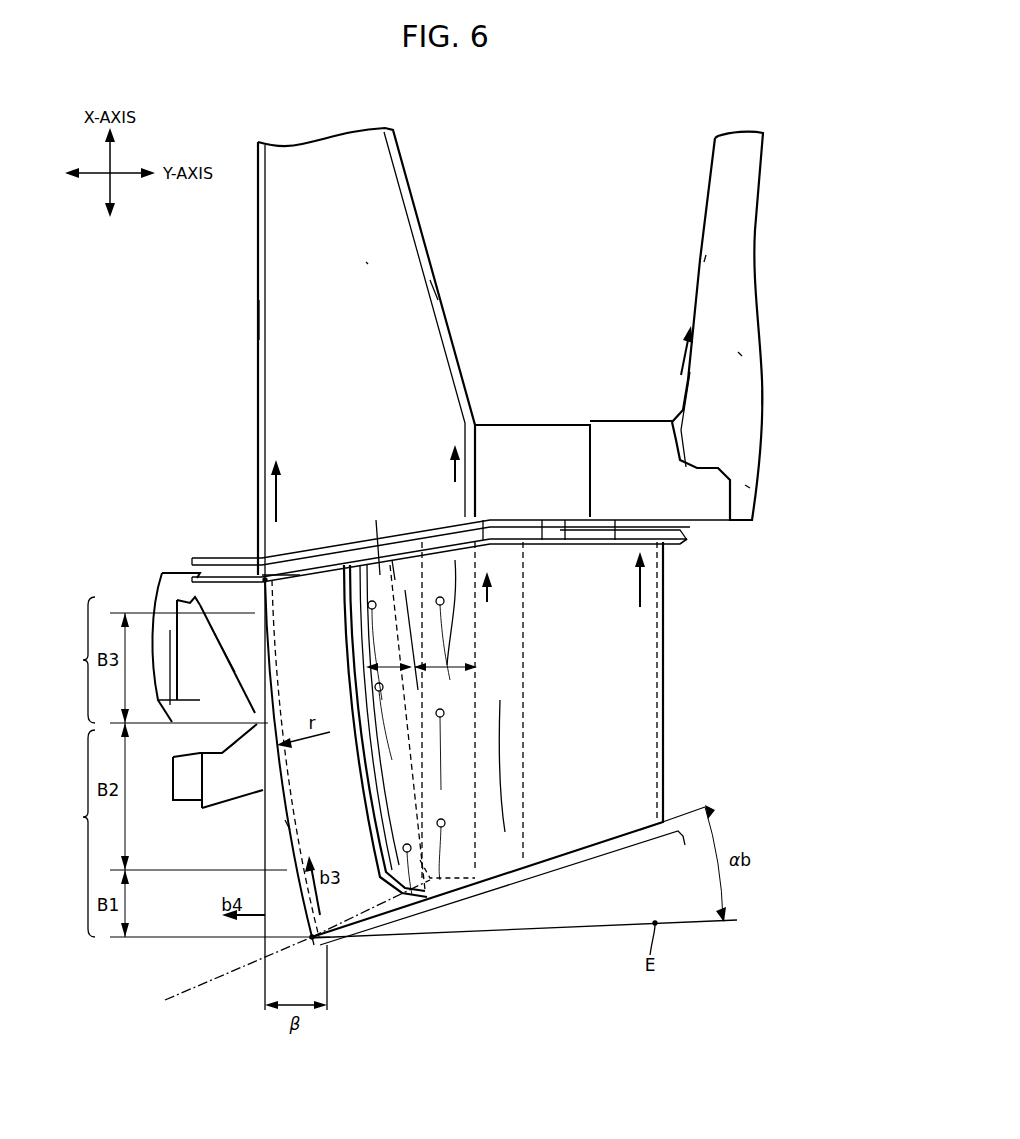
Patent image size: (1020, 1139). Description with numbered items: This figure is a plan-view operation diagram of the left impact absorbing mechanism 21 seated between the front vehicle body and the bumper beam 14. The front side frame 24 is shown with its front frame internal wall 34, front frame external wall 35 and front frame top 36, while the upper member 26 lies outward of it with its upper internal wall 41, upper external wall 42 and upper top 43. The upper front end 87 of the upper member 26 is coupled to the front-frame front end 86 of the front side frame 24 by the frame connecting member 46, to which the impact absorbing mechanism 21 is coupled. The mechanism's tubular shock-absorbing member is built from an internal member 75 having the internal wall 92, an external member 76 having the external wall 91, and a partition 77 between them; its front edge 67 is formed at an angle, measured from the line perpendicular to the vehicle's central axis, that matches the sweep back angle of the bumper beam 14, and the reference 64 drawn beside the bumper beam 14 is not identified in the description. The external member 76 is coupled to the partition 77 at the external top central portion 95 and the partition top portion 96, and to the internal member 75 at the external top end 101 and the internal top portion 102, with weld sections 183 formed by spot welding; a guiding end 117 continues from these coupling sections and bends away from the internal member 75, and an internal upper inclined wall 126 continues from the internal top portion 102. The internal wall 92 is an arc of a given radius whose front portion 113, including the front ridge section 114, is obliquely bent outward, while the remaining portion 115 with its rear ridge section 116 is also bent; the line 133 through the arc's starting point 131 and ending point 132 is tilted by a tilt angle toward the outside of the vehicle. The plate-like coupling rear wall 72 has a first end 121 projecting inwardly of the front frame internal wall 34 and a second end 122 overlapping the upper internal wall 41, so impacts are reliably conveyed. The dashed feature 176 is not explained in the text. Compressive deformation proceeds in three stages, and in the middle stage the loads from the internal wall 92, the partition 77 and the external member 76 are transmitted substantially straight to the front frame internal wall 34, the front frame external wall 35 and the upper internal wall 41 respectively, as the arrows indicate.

The front side frame 24 is at (258, 130).
The upper member 26 is at (692, 150).
The front frame internal wall 34 is at (258, 320).
The front frame external wall 35 is at (440, 300).
The front frame top 36 is at (365, 262).
The upper internal wall 41 is at (705, 258).
The upper external wall 42 is at (762, 398).
The upper top 43 is at (740, 355).
The frame connecting member 46 is at (505, 518).
The coupling rear wall 72 is at (615, 520).
The internal member 75 is at (262, 557).
The external member 76 is at (565, 520).
The partition 77 is at (542, 520).
The front-frame front end 86 is at (302, 568).
The upper front end 87 is at (748, 487).
The external wall 91 is at (665, 675).
The internal wall 92 is at (276, 760).
The external top central portion 95 is at (483, 520).
The partition top portion 96 is at (392, 560).
The external top end 101 is at (376, 520).
The internal top portion 102 is at (435, 880).
The front portion 113 is at (73, 833).
The front ridge section 114 is at (288, 823).
The remaining portion 115 is at (73, 660).
The rear ridge section 116 is at (263, 650).
The guiding end 117 is at (363, 808).
The first end 121 is at (258, 567).
The second end 122 is at (686, 545).
The internal upper inclined wall 126 is at (310, 790).
The starting point 131 is at (318, 943).
The ending point 132 is at (268, 588).
The line 133 is at (324, 955).
The hidden line 176 is at (455, 560).
The weld section 183 is at (362, 548).
The impact absorbing mechanism 21 is at (255, 633).
The bumper beam 14 is at (203, 976).
The reference line 64 is at (279, 947).
The front edge 67 is at (582, 848).